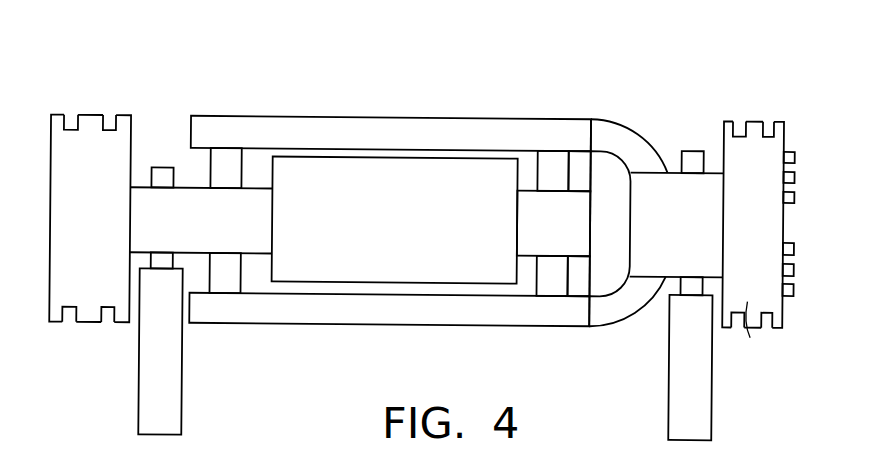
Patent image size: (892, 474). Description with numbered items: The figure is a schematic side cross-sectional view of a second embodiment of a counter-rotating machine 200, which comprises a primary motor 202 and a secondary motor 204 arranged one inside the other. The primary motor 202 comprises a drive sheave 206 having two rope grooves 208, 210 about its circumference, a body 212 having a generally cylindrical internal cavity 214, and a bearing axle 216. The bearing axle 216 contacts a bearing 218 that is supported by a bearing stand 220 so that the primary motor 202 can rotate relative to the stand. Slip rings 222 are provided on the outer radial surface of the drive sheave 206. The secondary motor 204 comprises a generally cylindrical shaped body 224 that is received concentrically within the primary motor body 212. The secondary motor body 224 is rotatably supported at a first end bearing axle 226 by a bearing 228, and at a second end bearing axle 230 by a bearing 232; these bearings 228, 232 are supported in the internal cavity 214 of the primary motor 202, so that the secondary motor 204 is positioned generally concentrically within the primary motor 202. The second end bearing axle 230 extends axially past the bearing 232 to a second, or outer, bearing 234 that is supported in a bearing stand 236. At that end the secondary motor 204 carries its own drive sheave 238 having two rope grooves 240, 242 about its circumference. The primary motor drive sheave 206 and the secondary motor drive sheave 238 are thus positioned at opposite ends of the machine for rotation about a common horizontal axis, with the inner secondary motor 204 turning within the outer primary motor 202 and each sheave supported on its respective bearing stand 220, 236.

The counter-rotating machine 200 is at (440, 85).
The primary motor 202 is at (299, 111).
The secondary motor 204 is at (468, 148).
The drive sheave 206 is at (763, 150).
The rope groove 208 is at (735, 118).
The rope groove 210 is at (770, 119).
The body 212 is at (412, 325).
The internal cavity 214 is at (597, 169).
The bearing axle 216 is at (652, 183).
The bearing 218 is at (697, 148).
The bearing stand 220 is at (670, 323).
The slip rings 222 is at (794, 175).
The body 224 is at (350, 158).
The first end bearing axle 226 is at (567, 232).
The bearing 228 is at (553, 167).
The second end bearing axle 230 is at (188, 207).
The bearing 232 is at (225, 170).
The outer bearing 234 is at (152, 181).
The bearing stand 236 is at (160, 369).
The drive sheave 238 is at (65, 200).
The rope groove 240 is at (68, 116).
The rope groove 242 is at (114, 117).